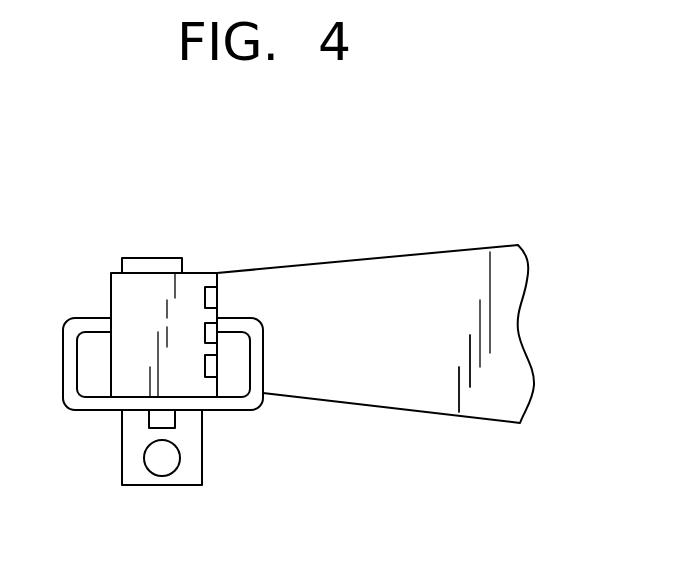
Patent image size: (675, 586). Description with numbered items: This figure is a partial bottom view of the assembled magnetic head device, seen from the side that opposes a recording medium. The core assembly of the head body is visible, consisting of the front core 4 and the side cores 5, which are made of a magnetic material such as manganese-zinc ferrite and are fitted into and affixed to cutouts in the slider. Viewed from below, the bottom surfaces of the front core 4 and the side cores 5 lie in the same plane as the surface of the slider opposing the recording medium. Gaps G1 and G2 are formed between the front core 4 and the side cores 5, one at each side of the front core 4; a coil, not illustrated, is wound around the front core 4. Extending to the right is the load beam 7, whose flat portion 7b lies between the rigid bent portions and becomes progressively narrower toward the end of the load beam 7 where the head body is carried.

The front core 4 is at (203, 337).
The side cores 5 is at (210, 297).
The load beam 7 is at (446, 248).
The flat portion 7b is at (478, 390).
The gap G1 is at (218, 350).
The gap G2 is at (218, 310).